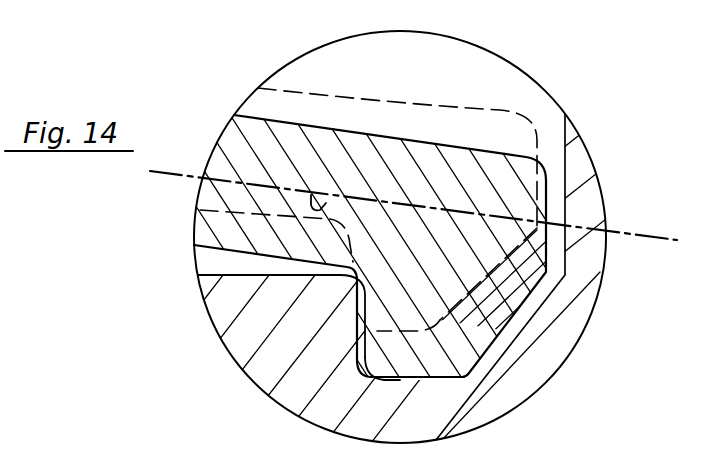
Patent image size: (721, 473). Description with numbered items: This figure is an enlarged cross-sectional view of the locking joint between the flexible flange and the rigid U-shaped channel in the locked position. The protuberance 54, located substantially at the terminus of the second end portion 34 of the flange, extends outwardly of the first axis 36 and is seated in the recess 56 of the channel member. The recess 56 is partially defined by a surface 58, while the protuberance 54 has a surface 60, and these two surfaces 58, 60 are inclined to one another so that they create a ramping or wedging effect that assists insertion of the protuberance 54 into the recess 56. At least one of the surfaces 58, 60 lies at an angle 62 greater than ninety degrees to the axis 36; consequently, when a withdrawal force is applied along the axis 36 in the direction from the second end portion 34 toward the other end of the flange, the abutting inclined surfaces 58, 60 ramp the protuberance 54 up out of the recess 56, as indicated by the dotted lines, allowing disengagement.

The second end portion 34 is at (258, 150).
The first axis 36 is at (167, 170).
The protuberance 54 is at (410, 310).
The recess 56 is at (420, 379).
The surface 58 is at (357, 342).
The surface 60 is at (355, 358).
The angle 62 is at (311, 195).